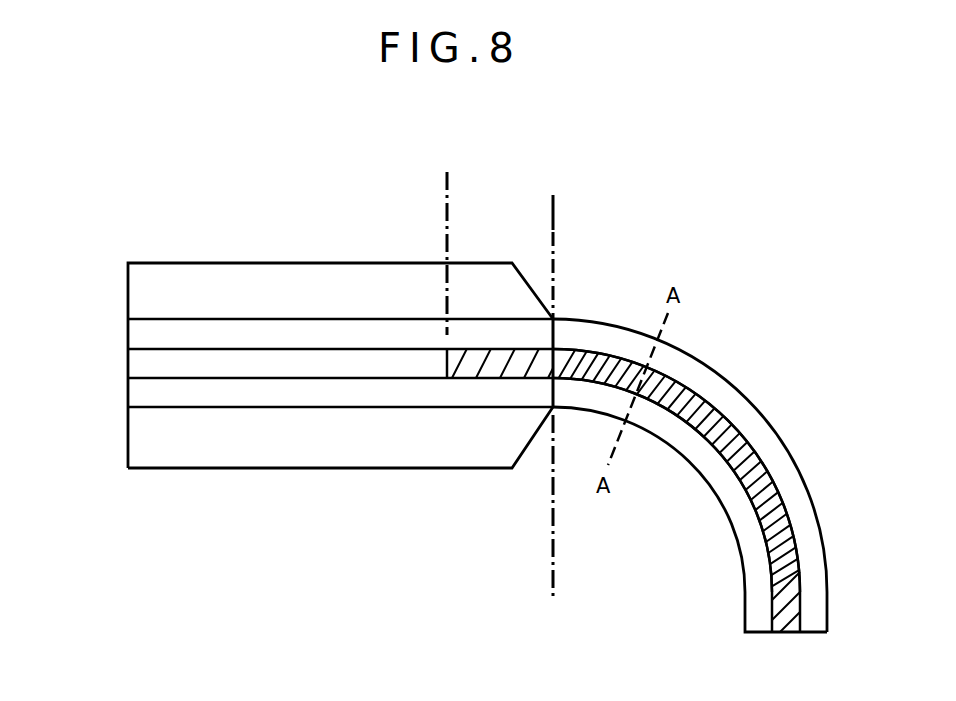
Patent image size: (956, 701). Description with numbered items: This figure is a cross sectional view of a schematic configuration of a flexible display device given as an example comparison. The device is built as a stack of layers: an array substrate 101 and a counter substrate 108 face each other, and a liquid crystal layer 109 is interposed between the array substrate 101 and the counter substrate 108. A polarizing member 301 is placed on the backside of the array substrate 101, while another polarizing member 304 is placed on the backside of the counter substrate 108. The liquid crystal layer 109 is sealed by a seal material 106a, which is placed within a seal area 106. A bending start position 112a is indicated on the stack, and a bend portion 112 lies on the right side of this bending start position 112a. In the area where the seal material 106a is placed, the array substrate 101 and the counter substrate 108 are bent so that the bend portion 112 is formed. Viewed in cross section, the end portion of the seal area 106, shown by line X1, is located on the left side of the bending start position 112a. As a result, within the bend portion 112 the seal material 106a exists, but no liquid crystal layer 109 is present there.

The polarizing member 304 is at (128, 293).
The counter substrate 108 is at (127, 333).
The liquid crystal layer 109 is at (127, 360).
The array substrate 101 is at (127, 393).
The polarizing member 301 is at (128, 442).
The seal area 106 is at (447, 209).
The bending start position 112a is at (552, 382).
The bend portion 112 is at (554, 228).
The seal material 106a is at (697, 393).